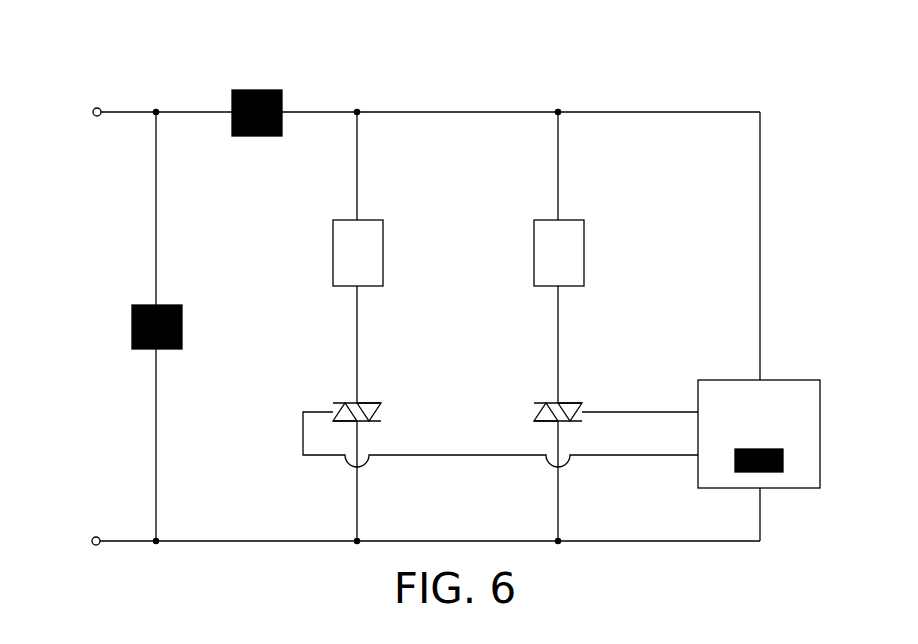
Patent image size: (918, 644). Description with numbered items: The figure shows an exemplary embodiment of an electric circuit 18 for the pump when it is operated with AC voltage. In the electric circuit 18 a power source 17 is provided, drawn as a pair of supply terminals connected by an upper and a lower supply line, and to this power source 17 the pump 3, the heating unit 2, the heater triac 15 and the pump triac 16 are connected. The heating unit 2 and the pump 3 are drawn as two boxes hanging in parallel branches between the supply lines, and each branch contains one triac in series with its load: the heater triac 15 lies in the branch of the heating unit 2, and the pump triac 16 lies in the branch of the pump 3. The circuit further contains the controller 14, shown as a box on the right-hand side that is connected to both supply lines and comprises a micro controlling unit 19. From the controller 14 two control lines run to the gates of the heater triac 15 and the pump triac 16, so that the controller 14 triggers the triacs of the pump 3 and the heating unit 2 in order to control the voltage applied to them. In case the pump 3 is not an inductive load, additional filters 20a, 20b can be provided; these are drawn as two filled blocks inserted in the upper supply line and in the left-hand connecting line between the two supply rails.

The heating unit 2 is at (365, 264).
The pump 3 is at (566, 264).
The controller 14 is at (821, 388).
The heater triac 15 is at (339, 404).
The pump triac 16 is at (572, 402).
The power source 17 is at (93, 112).
The electric circuit 18 is at (767, 90).
The micro controlling unit 19 is at (784, 460).
The additional filter 20a is at (258, 90).
The additional filter 20b is at (132, 325).